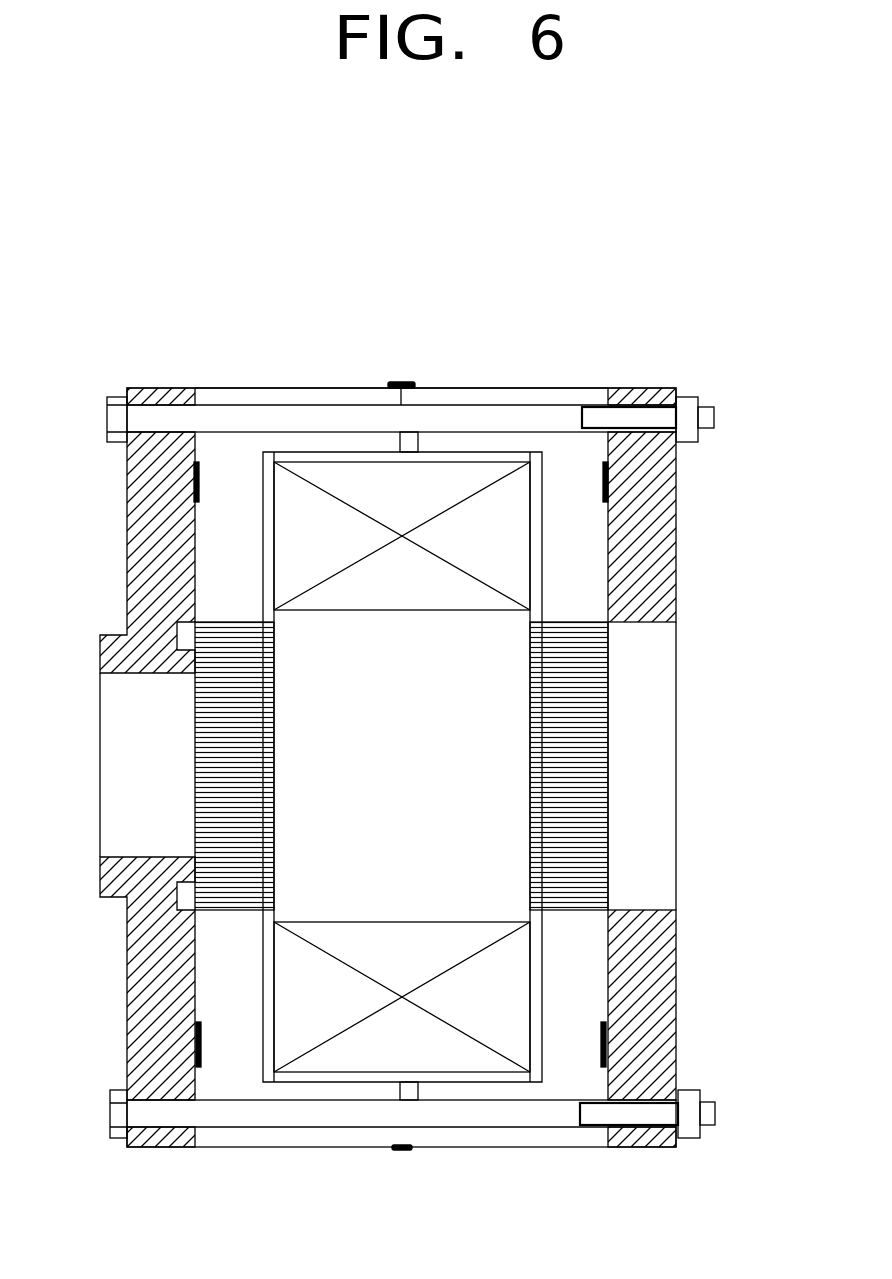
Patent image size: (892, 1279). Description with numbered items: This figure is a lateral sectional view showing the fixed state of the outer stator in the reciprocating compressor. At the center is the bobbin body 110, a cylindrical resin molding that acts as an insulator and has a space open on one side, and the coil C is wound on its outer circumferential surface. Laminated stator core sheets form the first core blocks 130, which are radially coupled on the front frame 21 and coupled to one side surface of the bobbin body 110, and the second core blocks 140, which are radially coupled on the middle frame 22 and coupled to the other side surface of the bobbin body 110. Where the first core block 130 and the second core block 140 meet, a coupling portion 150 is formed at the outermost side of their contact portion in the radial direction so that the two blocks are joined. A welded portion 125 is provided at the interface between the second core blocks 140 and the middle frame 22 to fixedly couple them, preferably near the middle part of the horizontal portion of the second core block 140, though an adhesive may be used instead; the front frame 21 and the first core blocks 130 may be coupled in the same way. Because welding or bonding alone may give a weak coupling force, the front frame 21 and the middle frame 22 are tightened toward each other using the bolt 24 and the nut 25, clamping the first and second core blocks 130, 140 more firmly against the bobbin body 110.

The front frame 21 is at (128, 510).
The middle frame 22 is at (668, 505).
The bolt 24 is at (512, 412).
The nut 25 is at (716, 416).
The bobbin body 110 is at (537, 543).
The welded portion 125 is at (198, 482).
The first core block 130 is at (303, 392).
The second core block 140 is at (460, 395).
The coupling portion 150 is at (398, 383).
The coil C is at (421, 470).